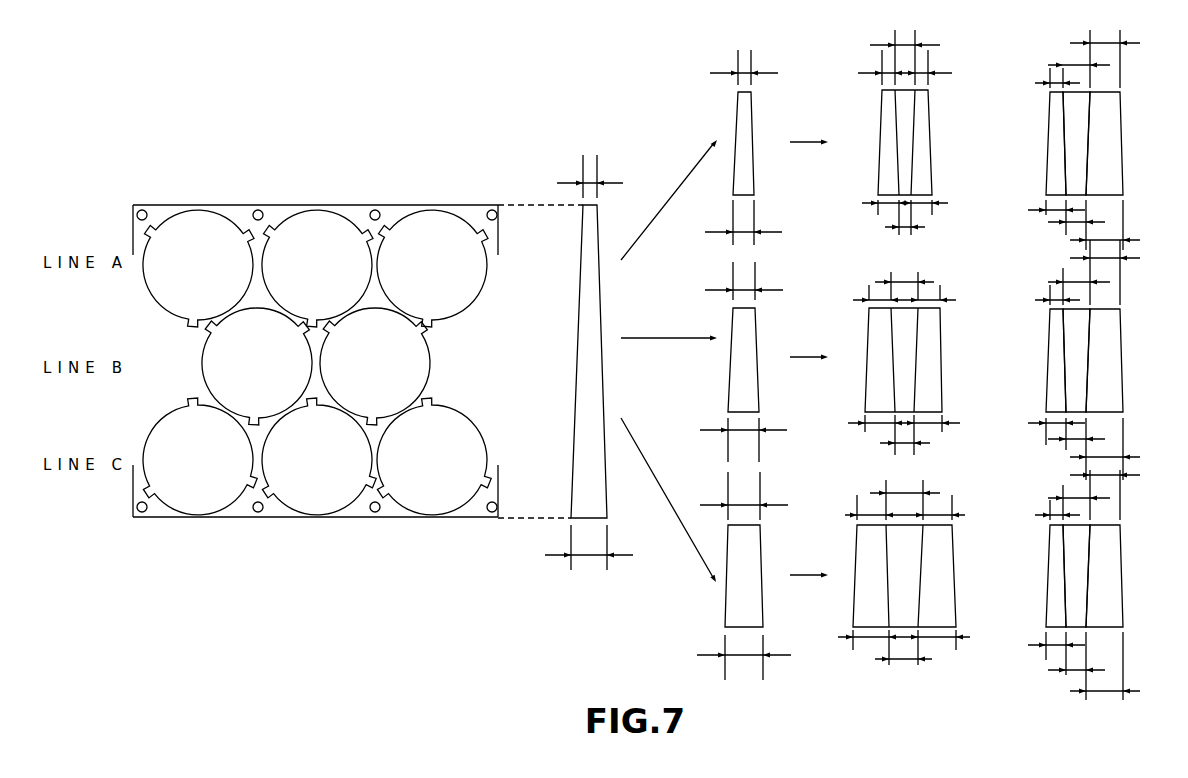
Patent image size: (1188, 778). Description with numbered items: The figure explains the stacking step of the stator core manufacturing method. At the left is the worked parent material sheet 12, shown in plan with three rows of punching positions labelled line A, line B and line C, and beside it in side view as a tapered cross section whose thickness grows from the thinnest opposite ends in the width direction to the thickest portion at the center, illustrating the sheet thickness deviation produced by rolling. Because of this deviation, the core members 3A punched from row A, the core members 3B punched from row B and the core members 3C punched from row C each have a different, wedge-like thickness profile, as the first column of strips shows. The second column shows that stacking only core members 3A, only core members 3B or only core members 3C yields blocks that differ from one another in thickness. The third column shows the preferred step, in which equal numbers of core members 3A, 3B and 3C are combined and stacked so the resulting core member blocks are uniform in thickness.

The worked parent material sheet 12 is at (156, 212).
The core members punched out from row A 3A is at (199, 235).
The core members punched out from row B 3B is at (227, 359).
The core members punched out from row C 3C is at (195, 493).